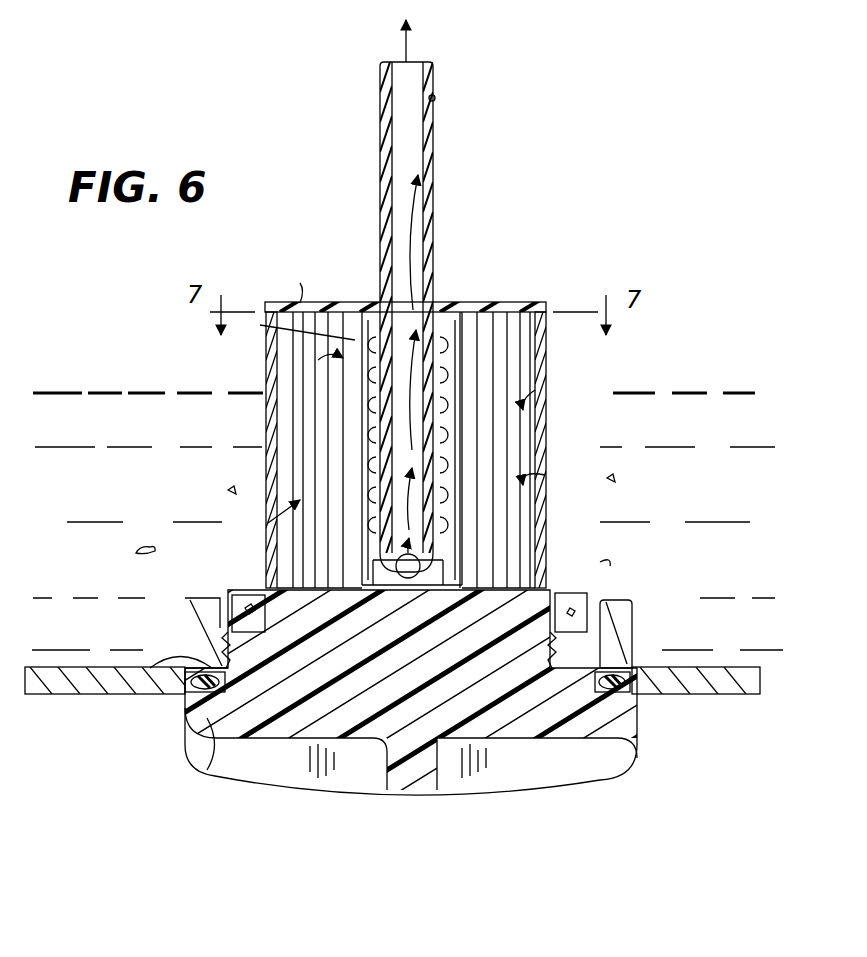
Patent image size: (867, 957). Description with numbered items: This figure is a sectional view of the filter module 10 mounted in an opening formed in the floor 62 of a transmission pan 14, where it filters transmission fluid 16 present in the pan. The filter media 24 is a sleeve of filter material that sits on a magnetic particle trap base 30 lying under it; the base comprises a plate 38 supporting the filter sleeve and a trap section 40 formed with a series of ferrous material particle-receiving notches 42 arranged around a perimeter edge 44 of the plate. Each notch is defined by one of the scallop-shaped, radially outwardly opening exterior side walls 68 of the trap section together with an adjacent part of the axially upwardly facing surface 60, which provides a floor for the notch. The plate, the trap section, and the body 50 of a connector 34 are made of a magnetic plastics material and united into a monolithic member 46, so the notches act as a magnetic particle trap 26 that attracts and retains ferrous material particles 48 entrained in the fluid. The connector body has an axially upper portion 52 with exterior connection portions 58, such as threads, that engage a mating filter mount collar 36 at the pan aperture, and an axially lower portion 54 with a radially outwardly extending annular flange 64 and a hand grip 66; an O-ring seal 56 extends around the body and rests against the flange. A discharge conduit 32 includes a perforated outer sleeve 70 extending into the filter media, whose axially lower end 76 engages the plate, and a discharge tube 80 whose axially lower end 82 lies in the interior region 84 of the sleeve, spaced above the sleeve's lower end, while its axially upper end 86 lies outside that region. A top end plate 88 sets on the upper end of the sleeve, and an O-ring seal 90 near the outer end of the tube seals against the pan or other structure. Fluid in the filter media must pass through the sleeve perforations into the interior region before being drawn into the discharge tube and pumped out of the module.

The filter module 10 is at (578, 286).
The transmission pan 14 is at (50, 699).
The transmission fluid 16 is at (402, 48).
The filter media 24 is at (548, 366).
The magnetic particle trap 26 is at (592, 593).
The magnetic particle trap base 30 is at (250, 588).
The discharge conduit 32 is at (440, 215).
The connector 34 is at (178, 760).
The filter mount collar 36 is at (633, 628).
The plate 38 is at (553, 590).
The trap section 40 is at (577, 592).
The ferrous material particle-receiving notches 42 is at (230, 612).
The perimeter edge 44 is at (266, 594).
The monolithic member 46 is at (645, 752).
The ferrous material particles 48 is at (268, 424).
The body 50 is at (480, 760).
The axially upper portion 52 is at (608, 628).
The axially lower portion 54 is at (545, 745).
The O-ring seal 56 is at (618, 745).
The exterior connection portions 58 is at (125, 692).
The axially upwardly facing surface 60 is at (228, 622).
The floor 62 is at (712, 667).
The annular flange 64 is at (207, 770).
The hand grip 66 is at (377, 797).
The exterior side walls 68 is at (222, 590).
The perforated outer sleeve 70 is at (520, 352).
The axially lower end 76 is at (413, 590).
The discharge tube 80 is at (372, 133).
The axially lower end 82 is at (372, 407).
The interior region 84 is at (450, 322).
The axially upper end 86 is at (381, 230).
The top end plate 88 is at (306, 278).
The O-ring seal 90 is at (436, 97).